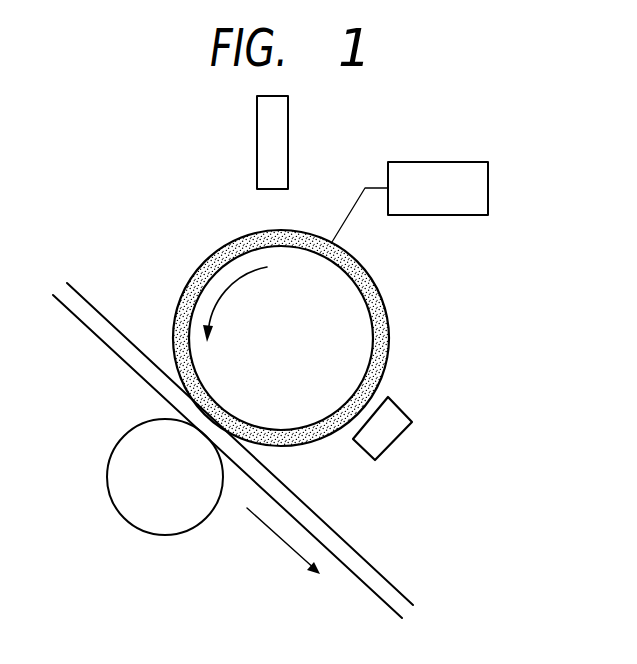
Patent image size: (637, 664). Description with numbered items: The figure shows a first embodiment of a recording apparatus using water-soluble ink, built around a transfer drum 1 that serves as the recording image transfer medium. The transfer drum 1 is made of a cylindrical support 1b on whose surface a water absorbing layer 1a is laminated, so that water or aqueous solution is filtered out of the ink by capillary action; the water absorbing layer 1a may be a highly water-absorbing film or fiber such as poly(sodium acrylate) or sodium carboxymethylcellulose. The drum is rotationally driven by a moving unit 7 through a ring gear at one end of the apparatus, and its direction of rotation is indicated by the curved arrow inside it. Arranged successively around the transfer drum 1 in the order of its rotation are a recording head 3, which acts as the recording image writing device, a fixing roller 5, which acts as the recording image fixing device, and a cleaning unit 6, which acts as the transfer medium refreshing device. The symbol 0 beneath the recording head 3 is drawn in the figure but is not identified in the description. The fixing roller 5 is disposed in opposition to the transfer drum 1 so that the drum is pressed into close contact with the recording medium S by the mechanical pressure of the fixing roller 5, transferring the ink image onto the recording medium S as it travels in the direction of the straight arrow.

The transfer drum 1 is at (321, 338).
The water absorbing layer 1a is at (385, 325).
The cylindrical support 1b is at (345, 285).
The recording head 3 is at (278, 142).
The light beam 0 is at (274, 209).
The moving unit 7 is at (474, 190).
The cleaning unit 6 is at (392, 436).
The fixing roller 5 is at (120, 486).
The recording medium S is at (108, 322).